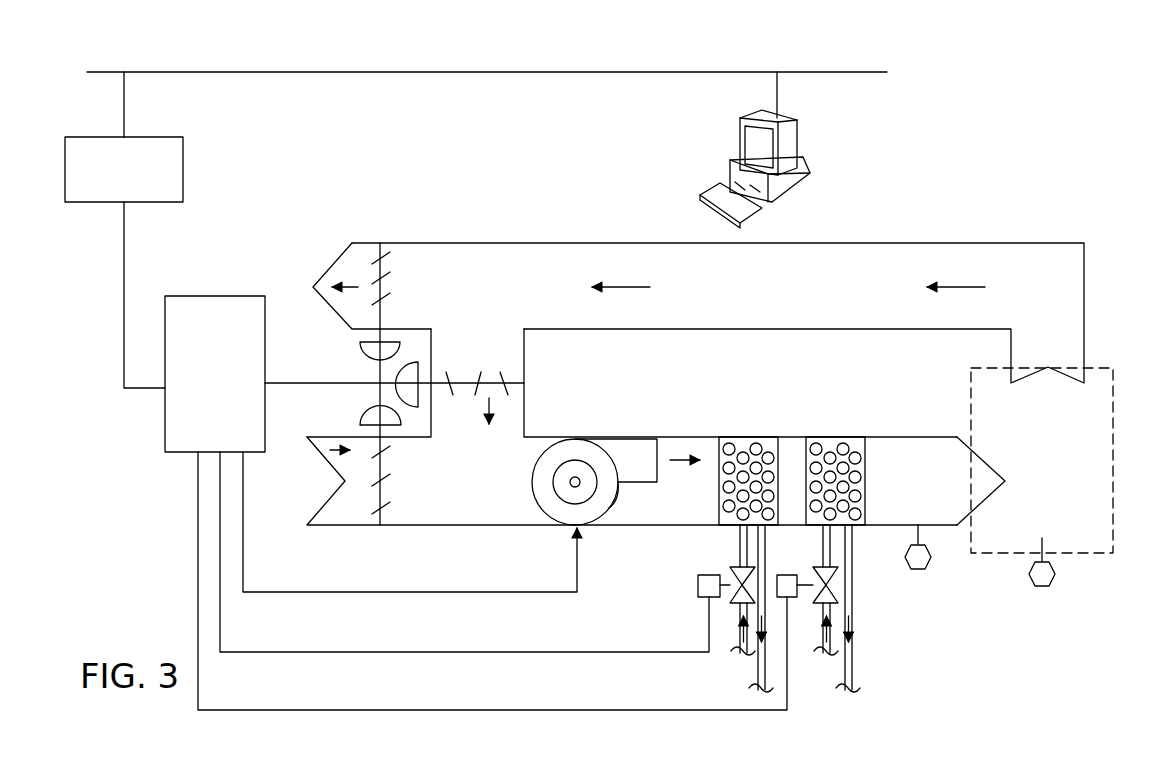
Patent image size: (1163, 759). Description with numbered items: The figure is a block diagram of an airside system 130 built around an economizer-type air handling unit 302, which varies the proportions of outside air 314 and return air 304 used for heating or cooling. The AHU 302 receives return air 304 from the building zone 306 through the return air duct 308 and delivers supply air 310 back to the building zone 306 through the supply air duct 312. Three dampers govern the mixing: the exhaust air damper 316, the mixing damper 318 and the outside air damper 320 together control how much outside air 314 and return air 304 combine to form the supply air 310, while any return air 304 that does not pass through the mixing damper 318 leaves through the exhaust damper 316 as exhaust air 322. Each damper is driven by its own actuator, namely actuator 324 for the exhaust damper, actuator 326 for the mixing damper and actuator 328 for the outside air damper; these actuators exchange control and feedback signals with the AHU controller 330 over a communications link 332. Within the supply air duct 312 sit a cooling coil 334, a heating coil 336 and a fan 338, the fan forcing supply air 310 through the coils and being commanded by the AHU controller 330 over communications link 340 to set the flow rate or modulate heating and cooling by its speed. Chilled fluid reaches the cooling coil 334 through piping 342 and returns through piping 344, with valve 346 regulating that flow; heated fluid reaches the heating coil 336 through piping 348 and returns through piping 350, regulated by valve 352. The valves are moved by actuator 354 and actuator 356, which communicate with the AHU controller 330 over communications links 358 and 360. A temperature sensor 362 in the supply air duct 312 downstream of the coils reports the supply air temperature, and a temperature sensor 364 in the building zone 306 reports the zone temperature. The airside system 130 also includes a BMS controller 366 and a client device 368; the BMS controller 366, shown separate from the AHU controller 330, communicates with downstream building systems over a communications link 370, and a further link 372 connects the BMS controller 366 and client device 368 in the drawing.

The airside system 130 is at (408, 49).
The air handling unit 302 is at (955, 152).
The return air 304 is at (1054, 301).
The building zone 306 is at (1042, 481).
The return air duct 308 is at (972, 242).
The supply air 310 is at (936, 440).
The supply air duct 312 is at (896, 437).
The outside air 314 is at (292, 525).
The exhaust air damper 316 is at (388, 270).
The mixing damper 318 is at (525, 378).
The outside air damper 320 is at (392, 489).
The exhaust air 322 is at (296, 246).
The actuator 324 is at (388, 348).
The actuator 326 is at (432, 366).
The actuator 328 is at (362, 418).
The AHU controller 330 is at (192, 296).
The communications link 332 is at (302, 382).
The cooling coil 334 is at (735, 437).
The heating coil 336 is at (826, 437).
The fan 338 is at (610, 495).
The communications link 340 is at (426, 590).
The piping 342 is at (740, 545).
The piping 344 is at (760, 676).
The valve 346 is at (740, 570).
The piping 348 is at (823, 545).
The piping 350 is at (852, 668).
The valve 352 is at (825, 570).
The actuator 354 is at (705, 593).
The actuator 356 is at (790, 597).
The communications link 358 is at (505, 650).
The communications link 360 is at (545, 708).
The temperature sensor 362 is at (920, 570).
The temperature sensor 364 is at (1044, 587).
The BMS controller 366 is at (183, 170).
The client device 368 is at (797, 143).
The communications link 370 is at (123, 339).
The communications bus 372 is at (215, 72).